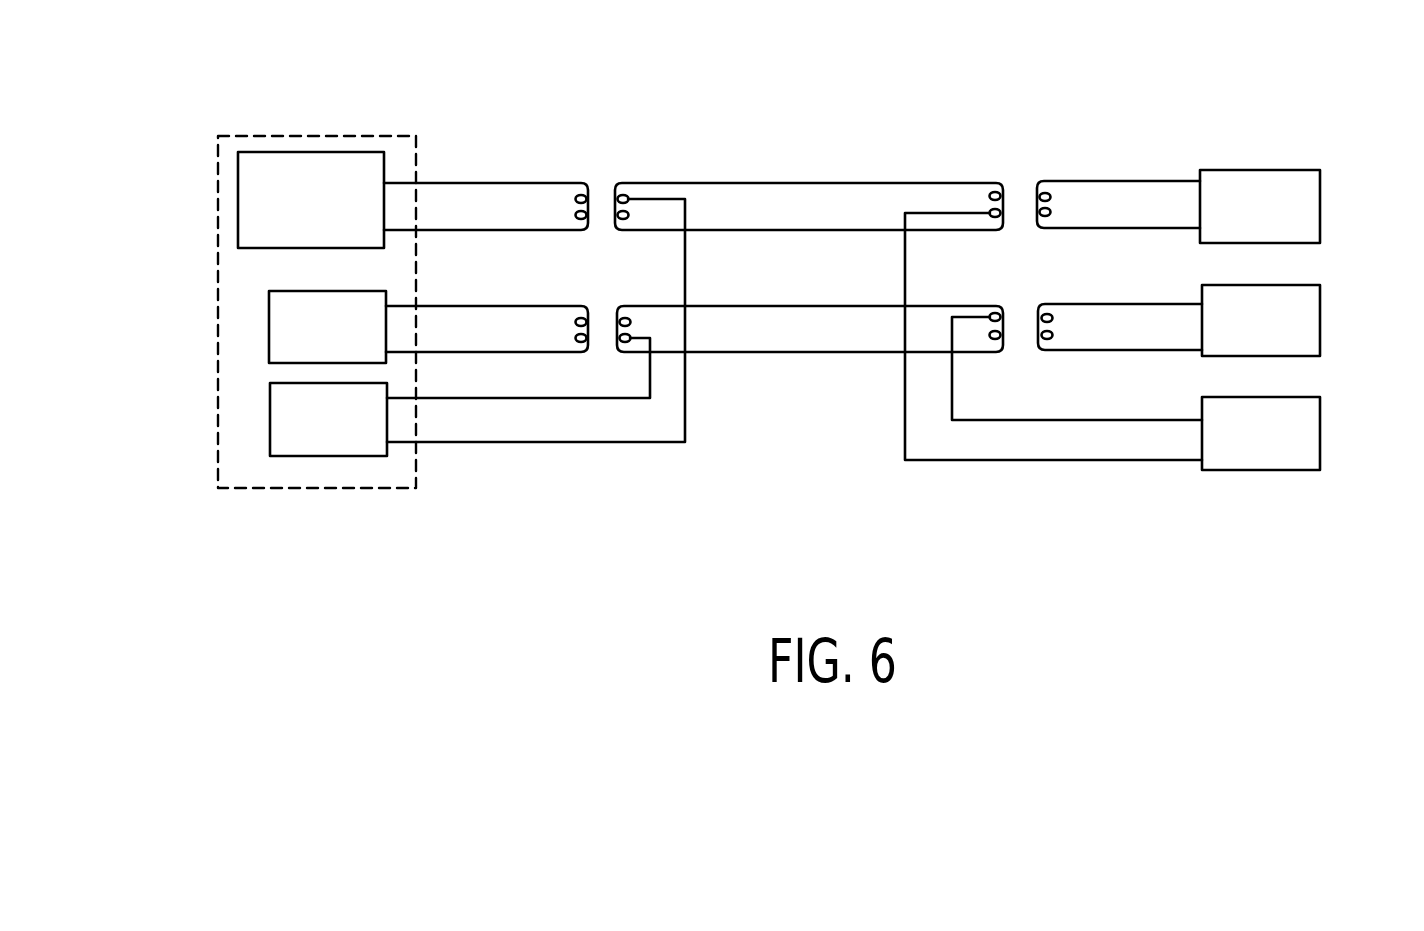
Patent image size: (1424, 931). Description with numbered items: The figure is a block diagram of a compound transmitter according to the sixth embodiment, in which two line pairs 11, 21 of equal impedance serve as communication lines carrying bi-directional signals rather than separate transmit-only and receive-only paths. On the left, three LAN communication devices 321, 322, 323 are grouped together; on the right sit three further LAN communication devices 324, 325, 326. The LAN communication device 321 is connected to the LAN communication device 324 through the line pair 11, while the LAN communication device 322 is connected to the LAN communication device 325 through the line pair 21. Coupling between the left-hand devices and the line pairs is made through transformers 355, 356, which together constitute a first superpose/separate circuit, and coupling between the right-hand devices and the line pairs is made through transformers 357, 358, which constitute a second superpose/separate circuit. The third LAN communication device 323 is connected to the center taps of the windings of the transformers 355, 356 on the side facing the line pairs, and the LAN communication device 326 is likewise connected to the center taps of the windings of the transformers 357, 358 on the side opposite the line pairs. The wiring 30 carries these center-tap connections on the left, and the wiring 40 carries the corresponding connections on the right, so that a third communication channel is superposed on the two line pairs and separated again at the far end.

The line pair 11 is at (750, 228).
The line pair 21 is at (783, 305).
The first cross-connection wiring 30 is at (580, 397).
The second cross-connection wiring 40 is at (1160, 420).
The LAN communication device 321 is at (245, 200).
The LAN communication device 322 is at (280, 317).
The LAN communication device 323 is at (280, 415).
The LAN communication device 324 is at (1277, 180).
The LAN communication device 325 is at (1308, 332).
The LAN communication device 326 is at (1313, 425).
The transformer 355 is at (600, 185).
The transformer 356 is at (603, 345).
The transformer 357 is at (1020, 188).
The transformer 358 is at (1020, 345).